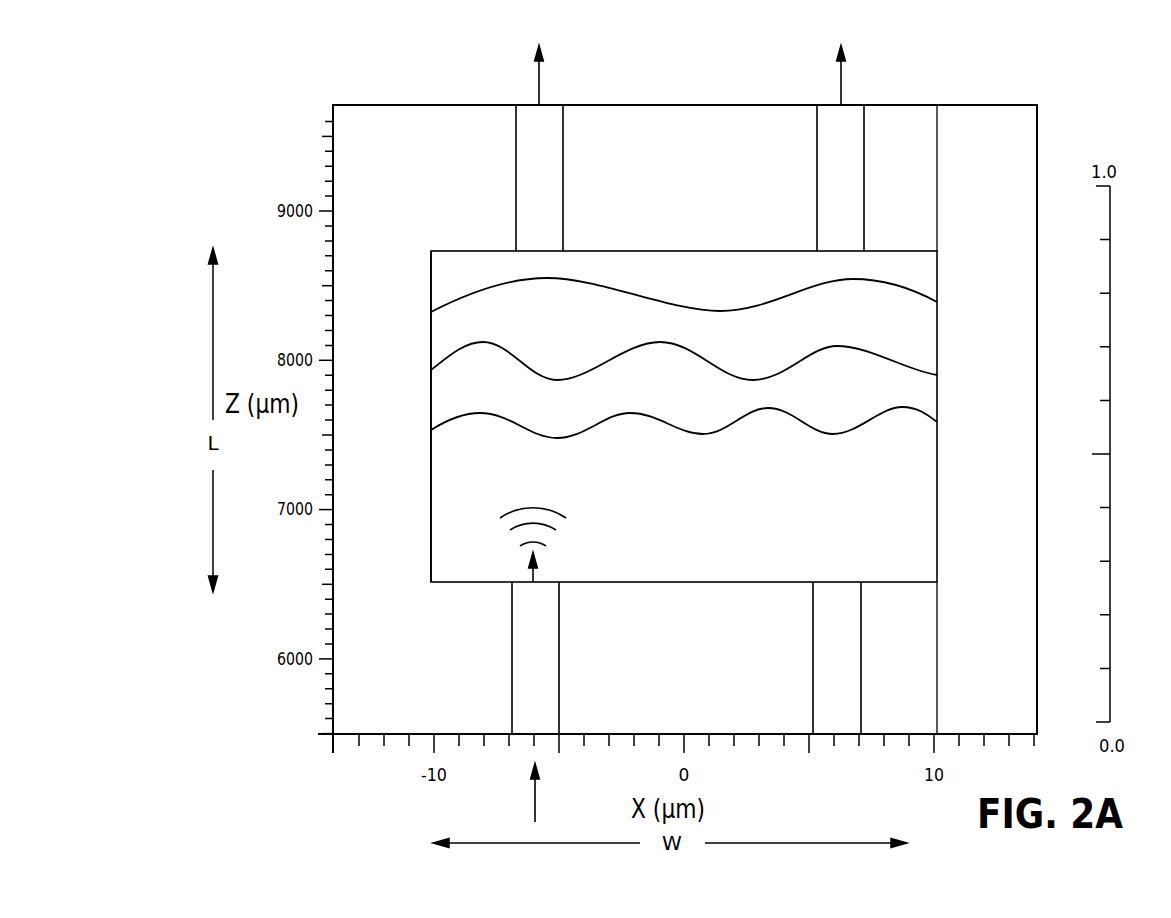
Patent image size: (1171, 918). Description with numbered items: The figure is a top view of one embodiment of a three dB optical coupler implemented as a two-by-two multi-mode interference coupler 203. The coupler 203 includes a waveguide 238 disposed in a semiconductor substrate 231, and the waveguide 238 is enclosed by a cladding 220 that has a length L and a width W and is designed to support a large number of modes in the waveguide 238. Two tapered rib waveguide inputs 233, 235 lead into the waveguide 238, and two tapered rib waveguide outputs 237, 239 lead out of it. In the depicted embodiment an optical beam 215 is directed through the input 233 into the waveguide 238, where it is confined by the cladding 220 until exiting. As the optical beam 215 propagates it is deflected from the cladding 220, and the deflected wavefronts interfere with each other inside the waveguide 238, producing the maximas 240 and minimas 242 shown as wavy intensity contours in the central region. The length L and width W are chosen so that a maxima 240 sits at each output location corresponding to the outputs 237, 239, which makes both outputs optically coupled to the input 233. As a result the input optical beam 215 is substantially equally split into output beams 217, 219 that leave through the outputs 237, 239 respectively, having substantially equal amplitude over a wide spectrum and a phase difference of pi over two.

The 2×2 multi-mode interference (MMI) coupler 203 is at (970, 105).
The optical beam 215 is at (535, 569).
The output beam 217 is at (540, 80).
The output beam 219 is at (840, 80).
The cladding 220 is at (431, 318).
The semiconductor substrate 231 is at (973, 193).
The waveguide input 233 is at (517, 735).
The waveguide input 235 is at (848, 735).
The waveguide output 237 is at (520, 105).
The waveguide 238 is at (446, 251).
The waveguide output 239 is at (850, 105).
The maxima 240 is at (564, 278).
The minima 242 is at (433, 314).